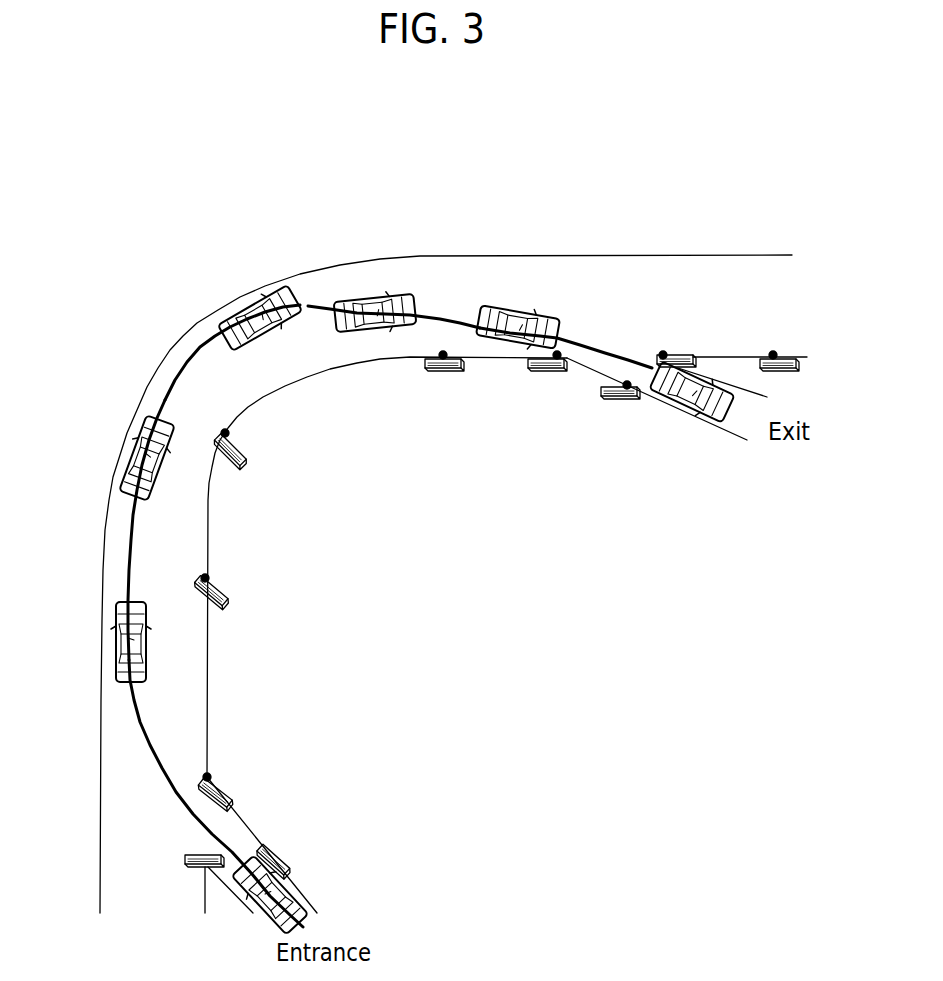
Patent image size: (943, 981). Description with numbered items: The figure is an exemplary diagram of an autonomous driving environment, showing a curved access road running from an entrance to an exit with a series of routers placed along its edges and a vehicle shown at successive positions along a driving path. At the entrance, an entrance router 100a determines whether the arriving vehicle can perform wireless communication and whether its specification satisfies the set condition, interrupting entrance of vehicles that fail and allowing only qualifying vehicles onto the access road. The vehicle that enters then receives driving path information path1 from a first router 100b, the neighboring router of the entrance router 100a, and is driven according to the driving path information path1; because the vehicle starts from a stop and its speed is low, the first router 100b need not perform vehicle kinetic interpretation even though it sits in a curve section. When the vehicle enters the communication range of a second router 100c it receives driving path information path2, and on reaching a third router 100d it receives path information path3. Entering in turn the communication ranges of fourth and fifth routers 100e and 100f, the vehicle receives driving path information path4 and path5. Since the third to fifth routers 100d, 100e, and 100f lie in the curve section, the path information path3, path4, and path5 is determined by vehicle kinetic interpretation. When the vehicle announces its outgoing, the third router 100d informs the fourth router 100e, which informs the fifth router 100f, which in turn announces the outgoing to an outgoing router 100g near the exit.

The entrance router 100a is at (290, 853).
The first router 100b is at (230, 792).
The second router 100c is at (228, 602).
The third router 100d is at (247, 458).
The fourth router 100e is at (444, 372).
The fifth router 100f is at (550, 372).
The outgoing router 100g is at (623, 403).
The driving path information path1 is at (152, 740).
The driving path information path2 is at (137, 528).
The path information path3 is at (187, 350).
The driving path information path4 is at (447, 318).
The driving path information path5 is at (598, 340).